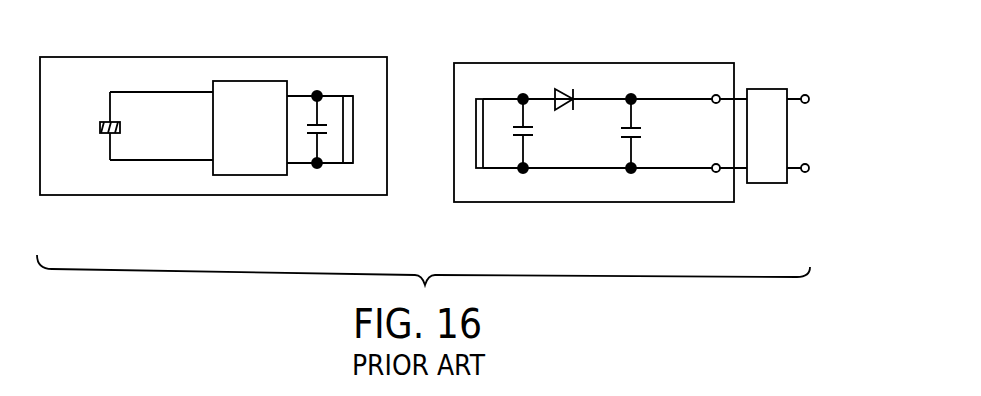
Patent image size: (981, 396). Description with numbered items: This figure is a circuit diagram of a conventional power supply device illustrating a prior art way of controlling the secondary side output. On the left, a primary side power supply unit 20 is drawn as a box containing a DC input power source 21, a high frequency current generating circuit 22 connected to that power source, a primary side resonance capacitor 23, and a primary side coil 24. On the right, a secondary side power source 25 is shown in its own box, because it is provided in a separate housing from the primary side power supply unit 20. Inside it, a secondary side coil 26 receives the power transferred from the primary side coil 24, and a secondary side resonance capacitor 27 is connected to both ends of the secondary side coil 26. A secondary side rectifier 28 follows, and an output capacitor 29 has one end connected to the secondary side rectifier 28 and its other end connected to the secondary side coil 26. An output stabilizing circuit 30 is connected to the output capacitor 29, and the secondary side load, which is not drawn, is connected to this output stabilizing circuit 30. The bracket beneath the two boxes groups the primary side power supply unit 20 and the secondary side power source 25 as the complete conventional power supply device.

The primary side power supply unit 20 is at (97, 57).
The DC input power source 21 is at (102, 135).
The high frequency current generating circuit 22 is at (247, 177).
The primary side resonance capacitor 23 is at (325, 120).
The primary side coil 24 is at (347, 167).
The secondary side power source 25 is at (520, 202).
The secondary side coil 26 is at (485, 97).
The secondary side resonance capacitor 27 is at (532, 142).
The secondary side rectifier 28 is at (563, 91).
The output capacitor 29 is at (638, 127).
The output stabilizing circuit 30 is at (765, 185).